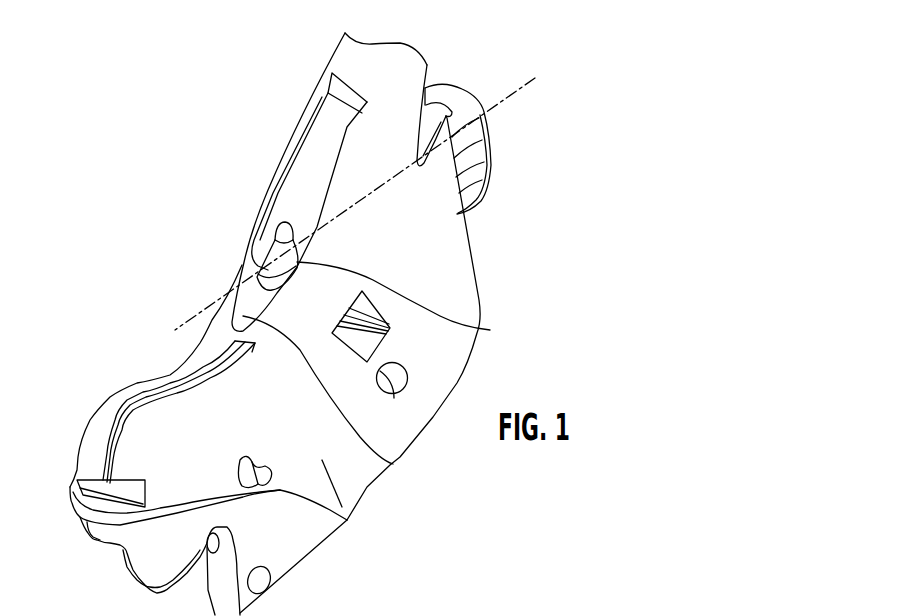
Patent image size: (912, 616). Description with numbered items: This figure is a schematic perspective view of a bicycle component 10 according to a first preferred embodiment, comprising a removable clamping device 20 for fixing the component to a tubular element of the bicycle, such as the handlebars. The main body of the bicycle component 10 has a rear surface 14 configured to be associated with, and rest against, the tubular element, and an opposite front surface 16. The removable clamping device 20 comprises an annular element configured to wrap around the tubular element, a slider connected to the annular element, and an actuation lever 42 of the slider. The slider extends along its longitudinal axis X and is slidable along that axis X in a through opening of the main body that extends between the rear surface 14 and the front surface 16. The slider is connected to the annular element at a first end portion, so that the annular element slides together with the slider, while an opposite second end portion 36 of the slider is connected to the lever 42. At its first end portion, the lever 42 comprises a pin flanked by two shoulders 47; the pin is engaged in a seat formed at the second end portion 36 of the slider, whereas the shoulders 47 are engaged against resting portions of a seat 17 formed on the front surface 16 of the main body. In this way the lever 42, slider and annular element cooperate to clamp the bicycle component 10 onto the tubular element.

The bicycle component 10 is at (162, 184).
The rear surface 14 is at (484, 247).
The front surface 16 is at (156, 333).
The seat 17 is at (393, 464).
The removable clamping device 20 is at (506, 157).
The second end portion 36 is at (262, 240).
The actuation lever 42 is at (343, 143).
The shoulders 47 is at (490, 330).
The longitudinal axis X is at (508, 92).